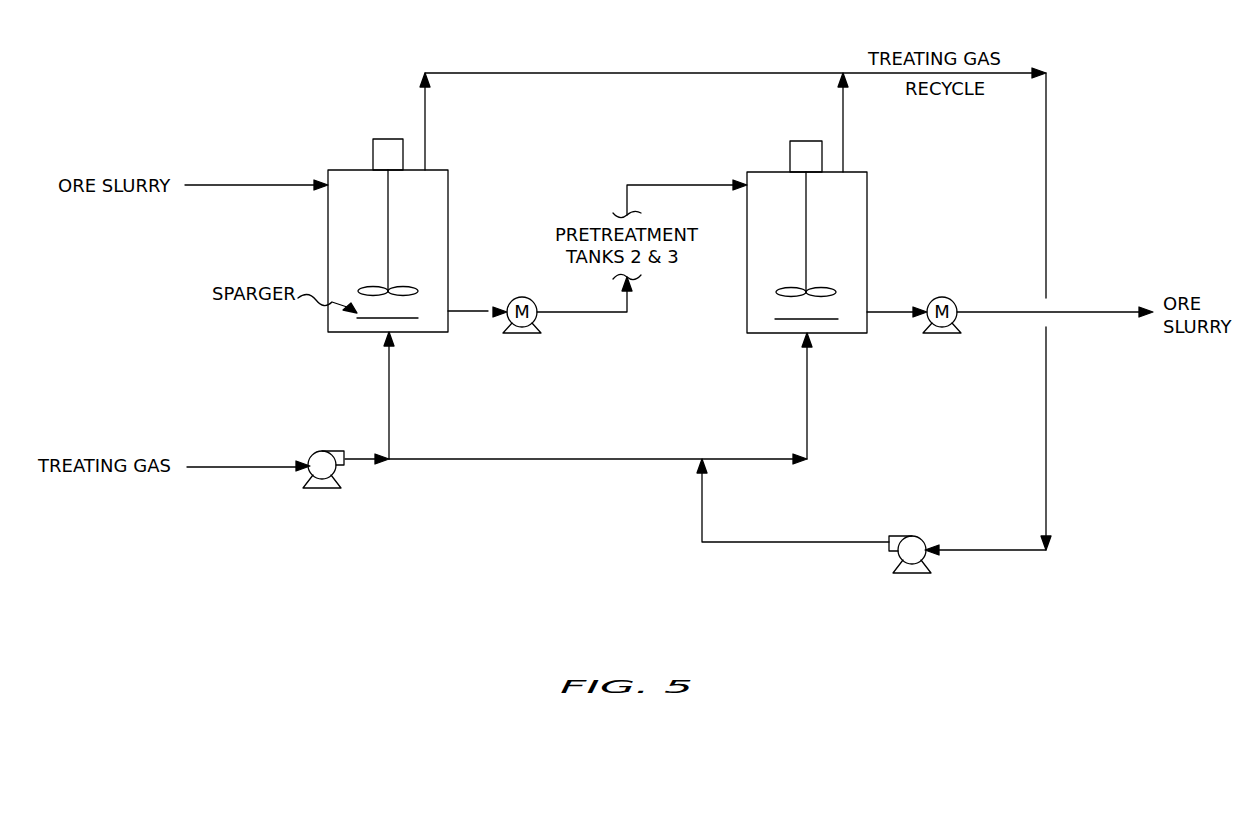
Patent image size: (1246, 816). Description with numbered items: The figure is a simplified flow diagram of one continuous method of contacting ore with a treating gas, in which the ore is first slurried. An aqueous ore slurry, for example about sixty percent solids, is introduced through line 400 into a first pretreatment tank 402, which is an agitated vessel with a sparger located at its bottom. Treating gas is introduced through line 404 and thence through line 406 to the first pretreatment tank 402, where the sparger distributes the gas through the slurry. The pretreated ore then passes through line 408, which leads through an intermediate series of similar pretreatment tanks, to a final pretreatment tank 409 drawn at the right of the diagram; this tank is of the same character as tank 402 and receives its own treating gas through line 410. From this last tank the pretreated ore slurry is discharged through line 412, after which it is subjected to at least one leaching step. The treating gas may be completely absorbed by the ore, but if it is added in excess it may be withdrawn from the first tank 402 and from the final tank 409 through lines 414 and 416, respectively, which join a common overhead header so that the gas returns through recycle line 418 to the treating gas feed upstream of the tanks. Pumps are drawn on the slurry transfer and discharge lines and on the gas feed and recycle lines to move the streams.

The line 400 is at (250, 185).
The first pretreatment tank 402 is at (448, 182).
The line 404 is at (249, 467).
The line 406 is at (389, 405).
The line 408 is at (593, 313).
The final pretreatment tank 409 is at (747, 322).
The line 410 is at (807, 398).
The line 412 is at (897, 312).
The line 414 is at (425, 108).
The line 416 is at (843, 112).
The line 418 is at (1046, 453).